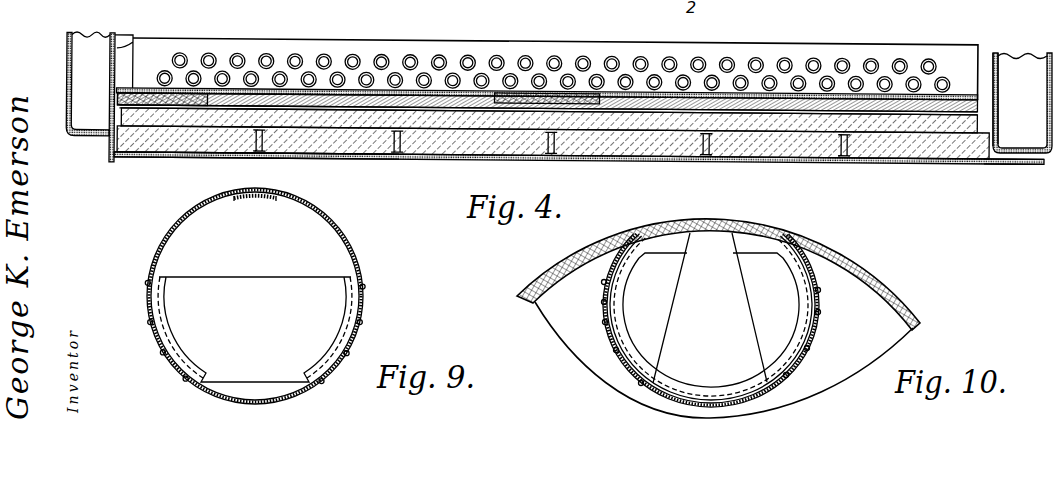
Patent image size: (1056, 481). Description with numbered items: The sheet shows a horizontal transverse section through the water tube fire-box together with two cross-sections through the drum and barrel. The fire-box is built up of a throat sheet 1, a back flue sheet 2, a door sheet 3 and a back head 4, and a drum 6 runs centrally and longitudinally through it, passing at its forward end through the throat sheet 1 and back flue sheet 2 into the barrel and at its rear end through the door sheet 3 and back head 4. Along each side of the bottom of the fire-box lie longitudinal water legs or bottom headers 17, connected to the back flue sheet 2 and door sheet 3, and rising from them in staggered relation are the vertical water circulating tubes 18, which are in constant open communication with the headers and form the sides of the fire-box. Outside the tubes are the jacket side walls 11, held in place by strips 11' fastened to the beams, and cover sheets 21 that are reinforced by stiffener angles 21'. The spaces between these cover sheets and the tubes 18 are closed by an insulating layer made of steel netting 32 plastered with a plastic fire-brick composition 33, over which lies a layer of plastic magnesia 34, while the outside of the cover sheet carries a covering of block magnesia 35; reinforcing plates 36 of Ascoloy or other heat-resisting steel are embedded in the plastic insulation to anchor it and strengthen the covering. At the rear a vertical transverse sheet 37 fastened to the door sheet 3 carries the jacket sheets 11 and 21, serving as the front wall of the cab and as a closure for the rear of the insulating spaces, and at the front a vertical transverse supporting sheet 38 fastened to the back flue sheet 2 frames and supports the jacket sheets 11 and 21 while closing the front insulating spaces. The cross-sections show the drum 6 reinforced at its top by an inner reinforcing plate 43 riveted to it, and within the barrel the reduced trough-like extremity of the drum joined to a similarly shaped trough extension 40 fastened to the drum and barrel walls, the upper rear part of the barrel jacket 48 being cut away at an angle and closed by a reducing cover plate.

In FIG. 4, the throat sheet 1 is at (1045, 58).
In FIG. 4, the back flue sheet 2 is at (1000, 68).
In FIG. 4, the door sheet 3 is at (118, 46).
In FIG. 4, the back head 4 is at (67, 47).
In FIG. 9, the drum 6 is at (345, 242).
In FIG. 4, the side walls of the jacket 11 is at (579, 172).
In FIG. 4, the strips 11' is at (256, 171).
In FIG. 4, the bottom headers 17 is at (417, 33).
In FIG. 4, the vertical water circulating tubes 18 is at (300, 52).
In FIG. 4, the sheets 21 is at (578, 155).
In FIG. 4, the stiffener angles 21' is at (573, 160).
In FIG. 4, the steel netting 32 is at (500, 90).
In FIG. 4, the plastic fire-brick composition 33 is at (433, 92).
In FIG. 4, the layer of plastic magnesia 34 is at (457, 108).
In FIG. 4, the covering of block magnesia 35 is at (508, 140).
In FIG. 4, the reinforcing plates 36 is at (173, 89).
In FIG. 4, the vertical transverse sheet 37 is at (113, 160).
In FIG. 4, the vertical transverse supporting sheet 38 is at (997, 163).
In FIG. 10, the trough extension 40 is at (800, 363).
In FIG. 9, the inner reinforcing plate 43 is at (258, 201).
In FIG. 10, the barrel jacket 48 is at (868, 274).